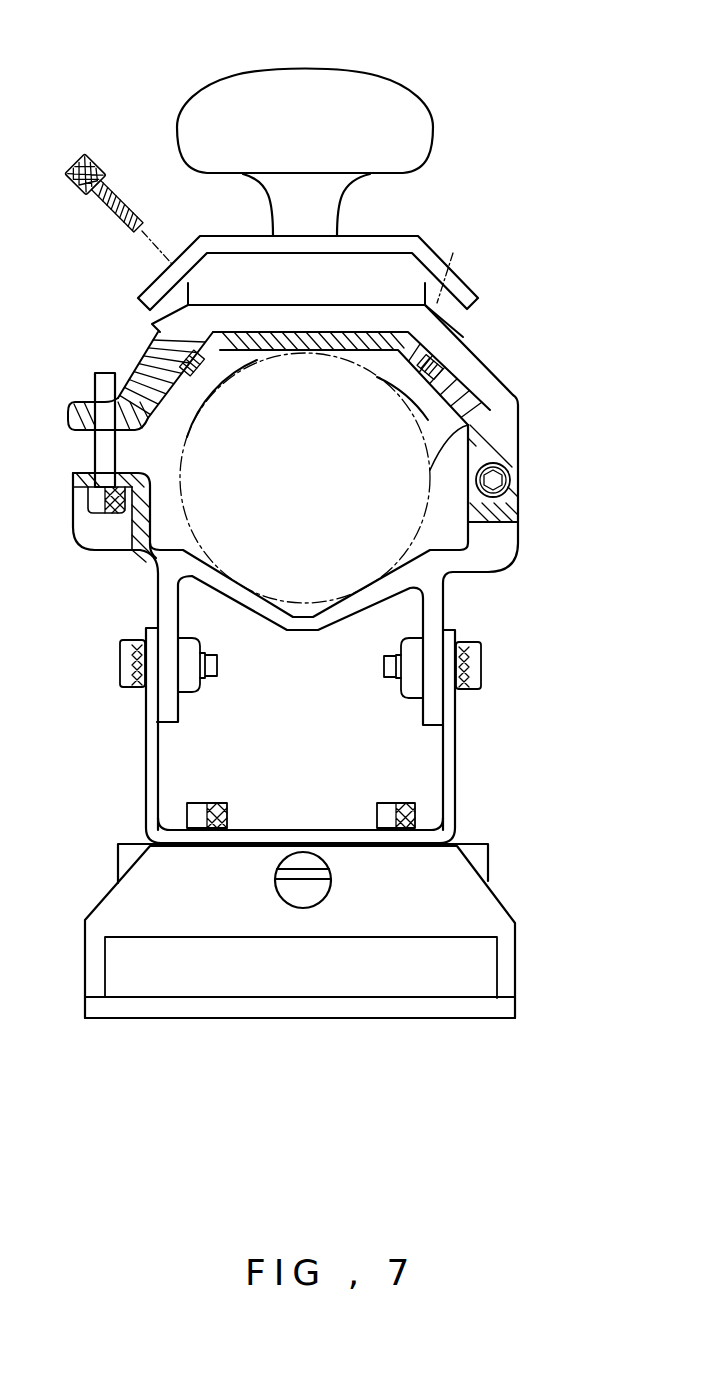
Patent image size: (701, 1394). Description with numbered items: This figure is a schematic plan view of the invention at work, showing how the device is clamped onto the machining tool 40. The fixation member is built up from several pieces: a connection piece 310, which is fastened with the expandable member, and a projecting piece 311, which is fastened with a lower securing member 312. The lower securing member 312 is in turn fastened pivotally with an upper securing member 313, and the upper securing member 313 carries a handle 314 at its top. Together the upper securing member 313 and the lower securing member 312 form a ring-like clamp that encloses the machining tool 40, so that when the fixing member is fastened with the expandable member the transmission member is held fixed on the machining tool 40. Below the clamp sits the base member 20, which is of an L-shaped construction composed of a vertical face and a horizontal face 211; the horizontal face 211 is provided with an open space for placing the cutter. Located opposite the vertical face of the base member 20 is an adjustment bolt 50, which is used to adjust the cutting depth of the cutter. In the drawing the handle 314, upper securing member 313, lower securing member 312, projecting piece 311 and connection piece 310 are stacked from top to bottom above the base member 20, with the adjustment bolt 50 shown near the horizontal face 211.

The handle 314 is at (320, 80).
The upper securing member 313 is at (132, 380).
The machining tool 40 is at (450, 423).
The lower securing member 312 is at (167, 573).
The projecting piece 311 is at (150, 737).
The connection piece 310 is at (347, 820).
The adjustment bolt 50 is at (317, 892).
The base member 20 is at (505, 972).
The horizontal face 211 is at (148, 1018).